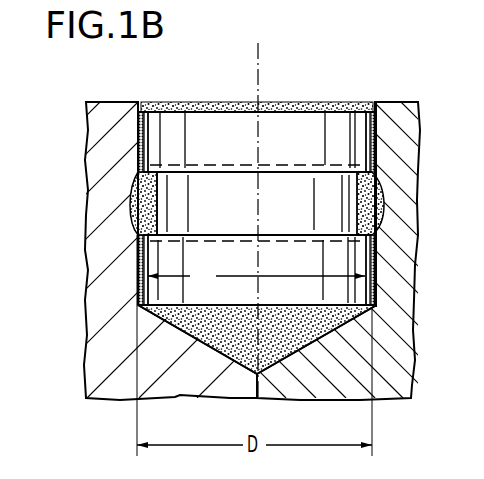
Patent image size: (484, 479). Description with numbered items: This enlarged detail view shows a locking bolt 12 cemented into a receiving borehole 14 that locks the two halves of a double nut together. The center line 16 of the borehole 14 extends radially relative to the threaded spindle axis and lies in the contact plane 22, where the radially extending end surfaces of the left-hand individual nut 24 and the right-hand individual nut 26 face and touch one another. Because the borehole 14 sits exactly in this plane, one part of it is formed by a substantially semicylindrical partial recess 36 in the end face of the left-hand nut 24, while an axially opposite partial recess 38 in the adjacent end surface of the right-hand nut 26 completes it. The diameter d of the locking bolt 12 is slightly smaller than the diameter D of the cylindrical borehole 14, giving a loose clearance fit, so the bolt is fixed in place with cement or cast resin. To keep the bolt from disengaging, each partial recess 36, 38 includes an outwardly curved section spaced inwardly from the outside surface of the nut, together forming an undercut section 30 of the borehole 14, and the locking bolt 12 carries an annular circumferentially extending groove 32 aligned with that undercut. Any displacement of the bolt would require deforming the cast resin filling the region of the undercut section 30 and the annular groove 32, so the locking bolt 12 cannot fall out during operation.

The locking bolt 12 is at (300, 130).
The receiving borehole 14 is at (375, 262).
The center line 16 is at (258, 62).
The contact plane 22 is at (259, 220).
The left-hand individual nut 24 is at (100, 127).
The right-hand individual nut 26 is at (400, 137).
The undercut section 30 is at (130, 190).
The annular groove 32 is at (130, 219).
The partial recess 36 is at (139, 126).
The partial recess 38 is at (378, 126).